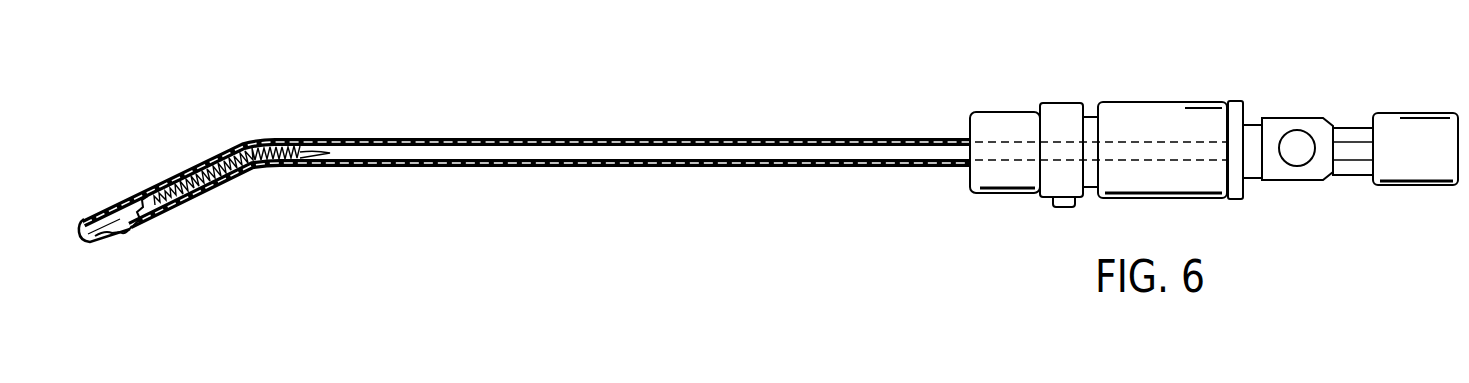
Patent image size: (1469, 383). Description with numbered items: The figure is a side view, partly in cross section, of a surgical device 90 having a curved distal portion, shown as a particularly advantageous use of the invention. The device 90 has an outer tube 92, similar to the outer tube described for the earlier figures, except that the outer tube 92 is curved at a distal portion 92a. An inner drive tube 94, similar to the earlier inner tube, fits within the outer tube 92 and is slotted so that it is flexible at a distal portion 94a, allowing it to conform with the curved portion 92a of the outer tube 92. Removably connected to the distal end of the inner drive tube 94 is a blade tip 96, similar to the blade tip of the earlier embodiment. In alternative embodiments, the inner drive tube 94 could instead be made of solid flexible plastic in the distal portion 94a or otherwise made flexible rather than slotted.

The surgical device 90 is at (771, 51).
The outer tube 92 is at (637, 138).
The distal portion of outer tube 92a is at (229, 130).
The inner drive tube 94 is at (330, 151).
The distal portion of inner tube 94a is at (240, 168).
The blade tip 96 is at (110, 217).